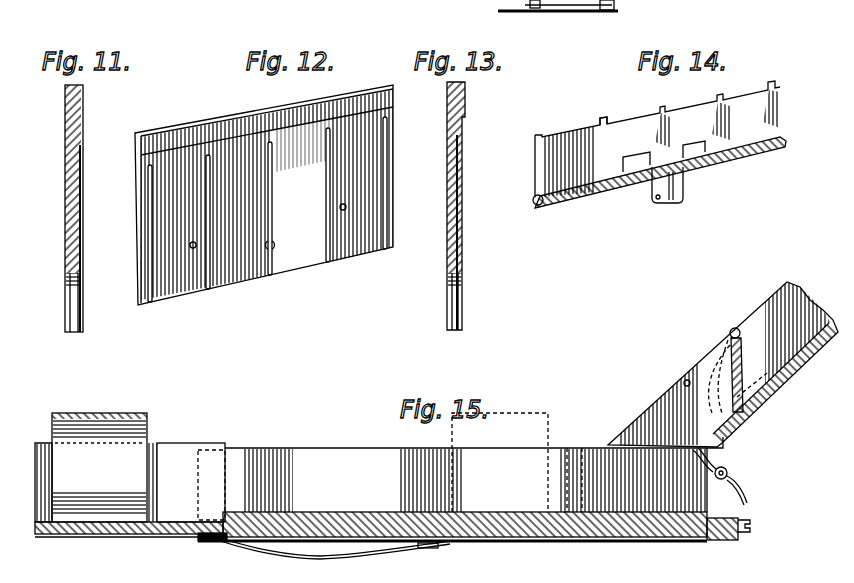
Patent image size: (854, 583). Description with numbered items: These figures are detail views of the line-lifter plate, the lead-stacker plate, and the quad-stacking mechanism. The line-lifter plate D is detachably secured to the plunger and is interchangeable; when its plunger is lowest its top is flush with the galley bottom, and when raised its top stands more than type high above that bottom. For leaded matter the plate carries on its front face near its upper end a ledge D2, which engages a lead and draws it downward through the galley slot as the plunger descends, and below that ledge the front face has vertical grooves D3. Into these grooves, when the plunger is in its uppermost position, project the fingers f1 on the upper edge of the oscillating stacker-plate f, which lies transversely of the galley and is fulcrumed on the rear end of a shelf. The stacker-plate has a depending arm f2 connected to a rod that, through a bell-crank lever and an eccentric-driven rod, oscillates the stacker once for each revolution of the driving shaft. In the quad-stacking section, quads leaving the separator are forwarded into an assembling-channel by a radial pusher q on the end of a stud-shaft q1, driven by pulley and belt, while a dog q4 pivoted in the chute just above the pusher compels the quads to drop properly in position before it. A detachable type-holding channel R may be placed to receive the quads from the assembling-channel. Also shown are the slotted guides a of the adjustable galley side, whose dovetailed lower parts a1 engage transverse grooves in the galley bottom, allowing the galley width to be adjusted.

In FIG. 11, the line-lifter plate D is at (65, 117).
In FIG. 12, the line-lifter plate D is at (264, 195).
In FIG. 13, the line-lifter plate D is at (456, 206).
In FIG. 12, the ledge D2 is at (198, 132).
In FIG. 11, the vertical grooves D3 is at (83, 208).
In FIG. 12, the vertical grooves D3 is at (402, 212).
In FIG. 13, the vertical grooves D3 is at (447, 212).
In FIG. 14, the oscillating stacker-plate f is at (685, 118).
In FIG. 14, the fingers f1 is at (604, 122).
In FIG. 14, the depending arm f2 is at (667, 198).
In FIG. 15, the detachable type-holding channel R is at (191, 472).
In FIG. 15, the slotted guides a is at (686, 381).
In FIG. 15, the lower parts of guides a1 is at (578, 448).
In FIG. 15, the radial pusher q is at (728, 473).
In FIG. 15, the stud-shaft q1 is at (746, 480).
In FIG. 15, the dog q4 is at (735, 328).